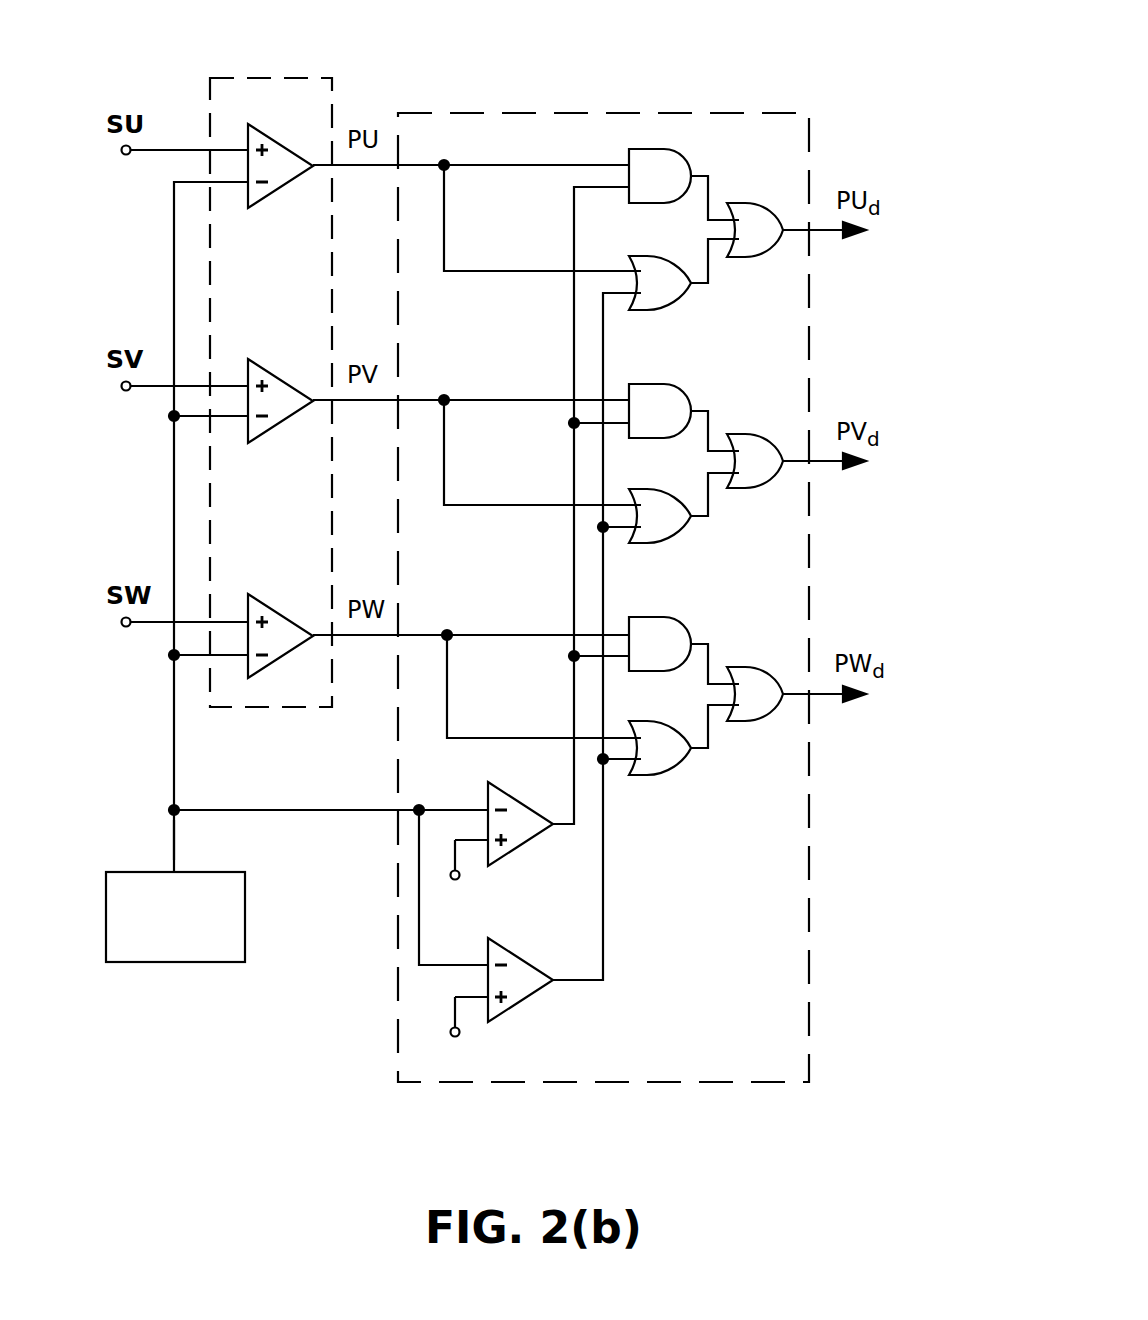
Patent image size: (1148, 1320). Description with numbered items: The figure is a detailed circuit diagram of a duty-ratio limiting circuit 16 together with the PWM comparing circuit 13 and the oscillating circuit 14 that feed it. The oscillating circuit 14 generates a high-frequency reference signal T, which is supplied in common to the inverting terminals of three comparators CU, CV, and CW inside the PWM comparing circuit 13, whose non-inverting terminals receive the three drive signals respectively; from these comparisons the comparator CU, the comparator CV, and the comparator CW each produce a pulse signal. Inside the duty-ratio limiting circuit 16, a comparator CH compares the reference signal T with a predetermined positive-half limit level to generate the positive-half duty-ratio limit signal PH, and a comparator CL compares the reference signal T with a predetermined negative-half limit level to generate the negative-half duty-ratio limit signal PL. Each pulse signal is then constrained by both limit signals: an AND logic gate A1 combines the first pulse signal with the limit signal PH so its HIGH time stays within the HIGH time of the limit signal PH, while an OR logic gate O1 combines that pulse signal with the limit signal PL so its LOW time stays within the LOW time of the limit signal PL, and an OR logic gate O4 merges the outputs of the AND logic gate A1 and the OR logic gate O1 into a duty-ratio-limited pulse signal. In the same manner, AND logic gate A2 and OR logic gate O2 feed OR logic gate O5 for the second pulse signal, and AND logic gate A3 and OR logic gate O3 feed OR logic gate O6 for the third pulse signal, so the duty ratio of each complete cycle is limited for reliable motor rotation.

The PWM comparing circuit 13 is at (280, 77).
The oscillating circuit 14 is at (245, 917).
The duty-ratio limiting circuit 16 is at (590, 112).
The high-frequency reference signal T is at (170, 846).
The comparator CU is at (285, 143).
The comparator CV is at (285, 378).
The comparator CW is at (287, 613).
The comparator CH is at (515, 803).
The comparator CL is at (513, 960).
The positive-half duty-ratio limit signal PH is at (564, 827).
The negative-half duty-ratio limit signal PL is at (564, 984).
The AND logic gate A1 is at (652, 205).
The AND logic gate A2 is at (652, 440).
The AND logic gate A3 is at (652, 673).
The OR logic gate O1 is at (652, 312).
The OR logic gate O2 is at (652, 545).
The OR logic gate O3 is at (652, 777).
The OR logic gate O4 is at (748, 259).
The OR logic gate O5 is at (748, 490).
The OR logic gate O6 is at (748, 723).